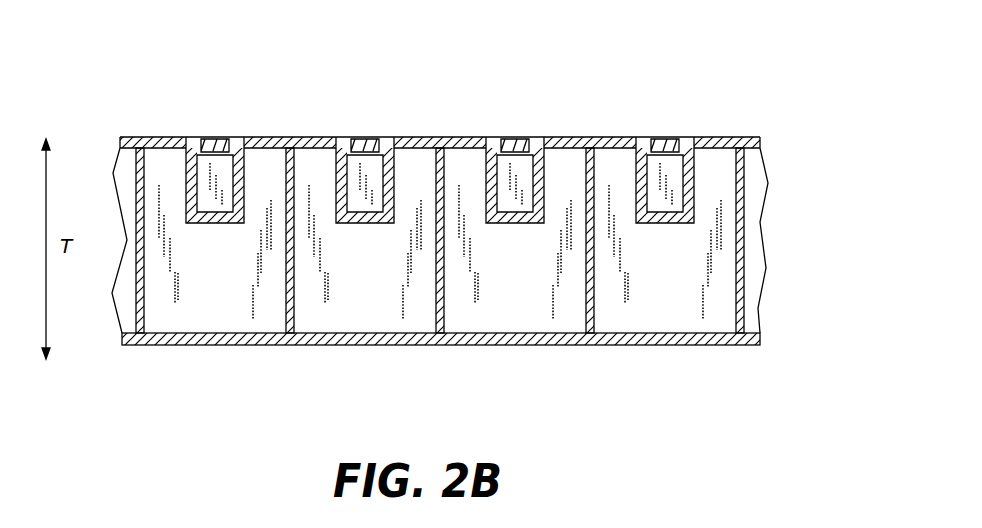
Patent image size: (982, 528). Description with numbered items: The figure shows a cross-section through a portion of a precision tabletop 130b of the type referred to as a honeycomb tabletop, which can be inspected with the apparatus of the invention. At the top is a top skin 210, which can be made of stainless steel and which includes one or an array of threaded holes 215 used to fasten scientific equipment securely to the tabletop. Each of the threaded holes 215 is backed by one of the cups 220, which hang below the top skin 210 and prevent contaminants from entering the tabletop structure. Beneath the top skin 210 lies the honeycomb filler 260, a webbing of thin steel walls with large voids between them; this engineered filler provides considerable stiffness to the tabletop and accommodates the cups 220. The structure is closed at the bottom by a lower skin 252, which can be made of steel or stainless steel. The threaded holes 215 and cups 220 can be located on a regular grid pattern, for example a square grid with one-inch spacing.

The precision tabletop 130b is at (729, 53).
The top skin 210 is at (178, 138).
The threaded holes 215 is at (215, 140).
The cups 220 is at (481, 185).
The lower skin 252 is at (168, 345).
The honeycomb filler 260 is at (746, 223).